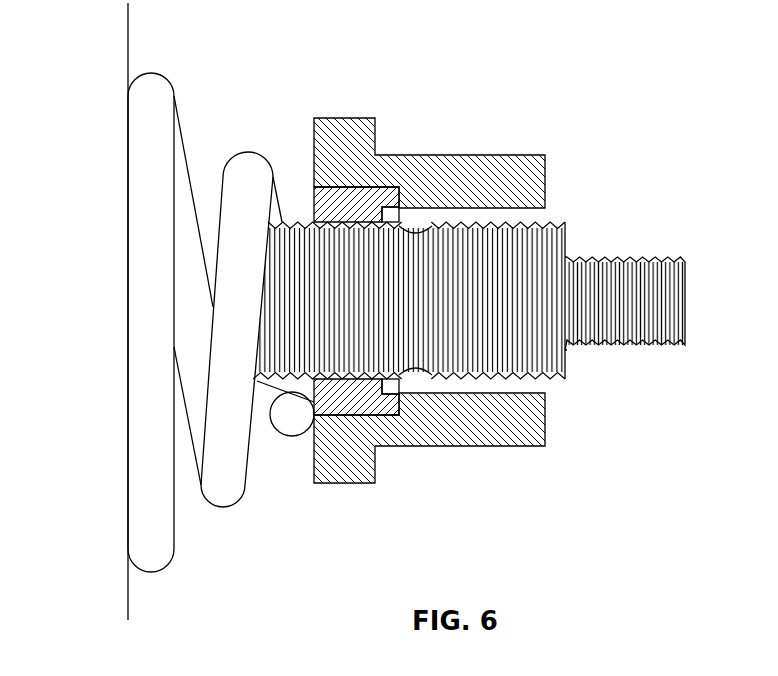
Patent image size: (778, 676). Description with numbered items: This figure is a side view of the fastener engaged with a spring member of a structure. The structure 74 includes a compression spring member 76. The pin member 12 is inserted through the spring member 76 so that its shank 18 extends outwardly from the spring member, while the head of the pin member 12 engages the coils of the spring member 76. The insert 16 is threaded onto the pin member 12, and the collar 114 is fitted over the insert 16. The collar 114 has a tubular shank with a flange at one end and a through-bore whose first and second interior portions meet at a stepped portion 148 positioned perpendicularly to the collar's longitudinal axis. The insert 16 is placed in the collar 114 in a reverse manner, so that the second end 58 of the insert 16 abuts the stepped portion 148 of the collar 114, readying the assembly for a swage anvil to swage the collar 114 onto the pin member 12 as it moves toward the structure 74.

The structure 74 is at (128, 47).
The compression spring member 76 is at (158, 88).
The insert 16 is at (350, 197).
The second end 58 is at (392, 396).
The collar 114 is at (418, 162).
The pin member 12 is at (460, 227).
The shank portion 18 is at (495, 287).
The stepped portion 148 is at (398, 396).